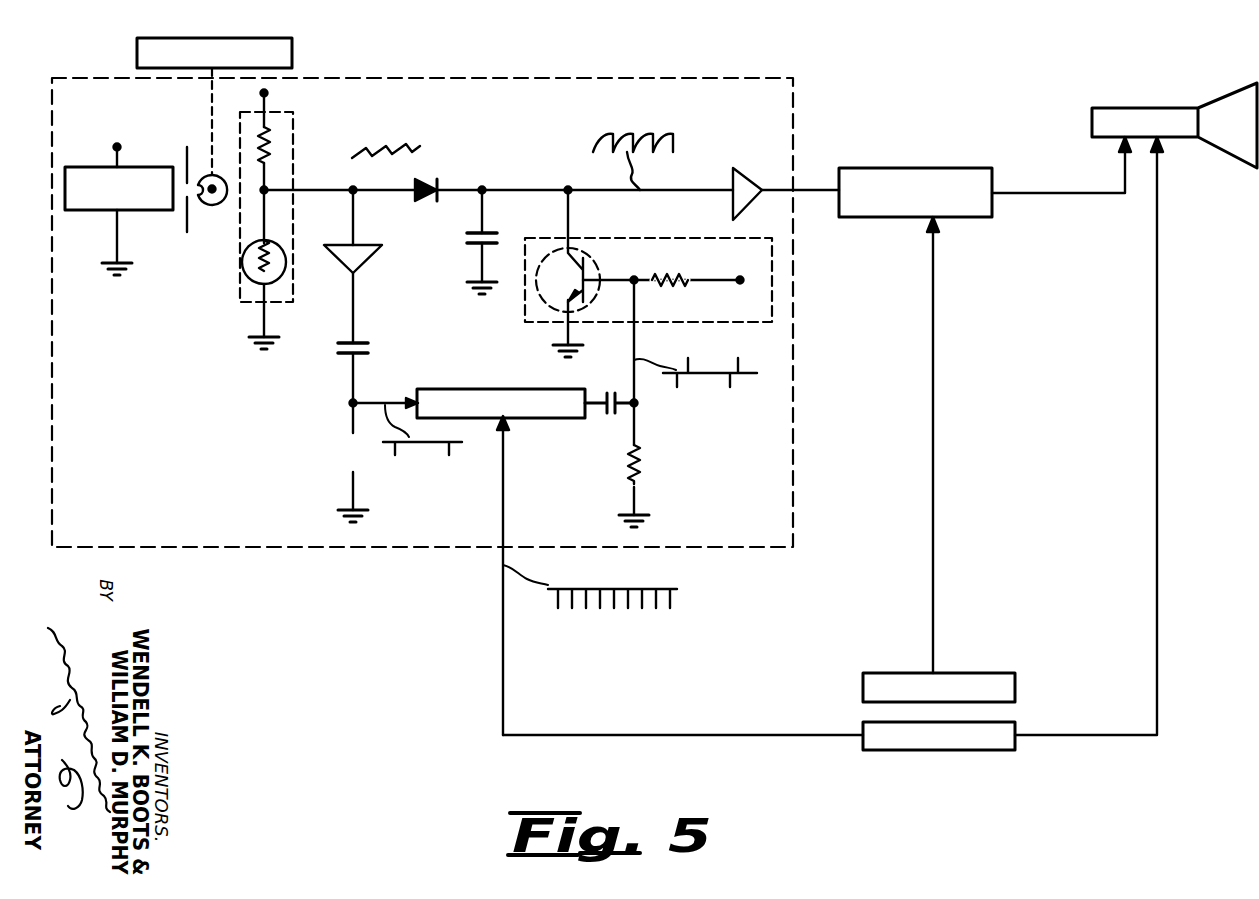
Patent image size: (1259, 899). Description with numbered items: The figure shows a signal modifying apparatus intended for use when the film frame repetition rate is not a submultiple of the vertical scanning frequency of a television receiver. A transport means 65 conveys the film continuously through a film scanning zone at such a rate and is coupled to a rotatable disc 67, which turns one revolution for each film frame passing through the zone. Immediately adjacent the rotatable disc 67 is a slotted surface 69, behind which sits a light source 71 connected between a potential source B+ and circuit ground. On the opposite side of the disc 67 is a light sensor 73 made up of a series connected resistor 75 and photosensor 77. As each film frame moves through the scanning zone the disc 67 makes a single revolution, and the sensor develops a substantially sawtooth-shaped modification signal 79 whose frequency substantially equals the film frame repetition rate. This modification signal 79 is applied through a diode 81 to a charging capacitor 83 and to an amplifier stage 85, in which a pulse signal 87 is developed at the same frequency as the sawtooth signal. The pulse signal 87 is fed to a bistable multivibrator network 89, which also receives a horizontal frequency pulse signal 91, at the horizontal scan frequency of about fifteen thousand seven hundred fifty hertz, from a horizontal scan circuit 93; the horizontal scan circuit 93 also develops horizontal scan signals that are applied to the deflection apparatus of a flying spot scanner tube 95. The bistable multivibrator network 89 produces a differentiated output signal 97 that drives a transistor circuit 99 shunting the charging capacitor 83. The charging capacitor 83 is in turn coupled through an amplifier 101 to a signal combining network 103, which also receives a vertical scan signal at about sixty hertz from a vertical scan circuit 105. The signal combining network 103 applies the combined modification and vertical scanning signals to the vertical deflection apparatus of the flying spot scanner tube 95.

The transport means 65 is at (137, 45).
The rotatable disc 67 is at (210, 206).
The slotted surface 69 is at (184, 216).
The light source 71 is at (102, 210).
The light sensor 73 is at (293, 150).
The resistor 75 is at (269, 165).
The photosensor 77 is at (276, 275).
The sawtooth-shaped modification signal 79 is at (386, 190).
The diode 81 is at (437, 180).
The charging capacitor 83 is at (486, 228).
The amplifier stage 85 is at (371, 252).
The pulse signal 87 is at (449, 447).
The bistable multivibrator network 89 is at (500, 388).
The horizontal frequency pulse signal 91 is at (616, 588).
The horizontal scan circuit 93 is at (890, 750).
The flying spot scanner tube 95 is at (1209, 103).
The differentiated output signal 97 is at (732, 384).
The transistor circuit 99 is at (690, 238).
The amplifier 101 is at (746, 170).
The signal combining network 103 is at (903, 168).
The vertical scan circuit 105 is at (969, 673).